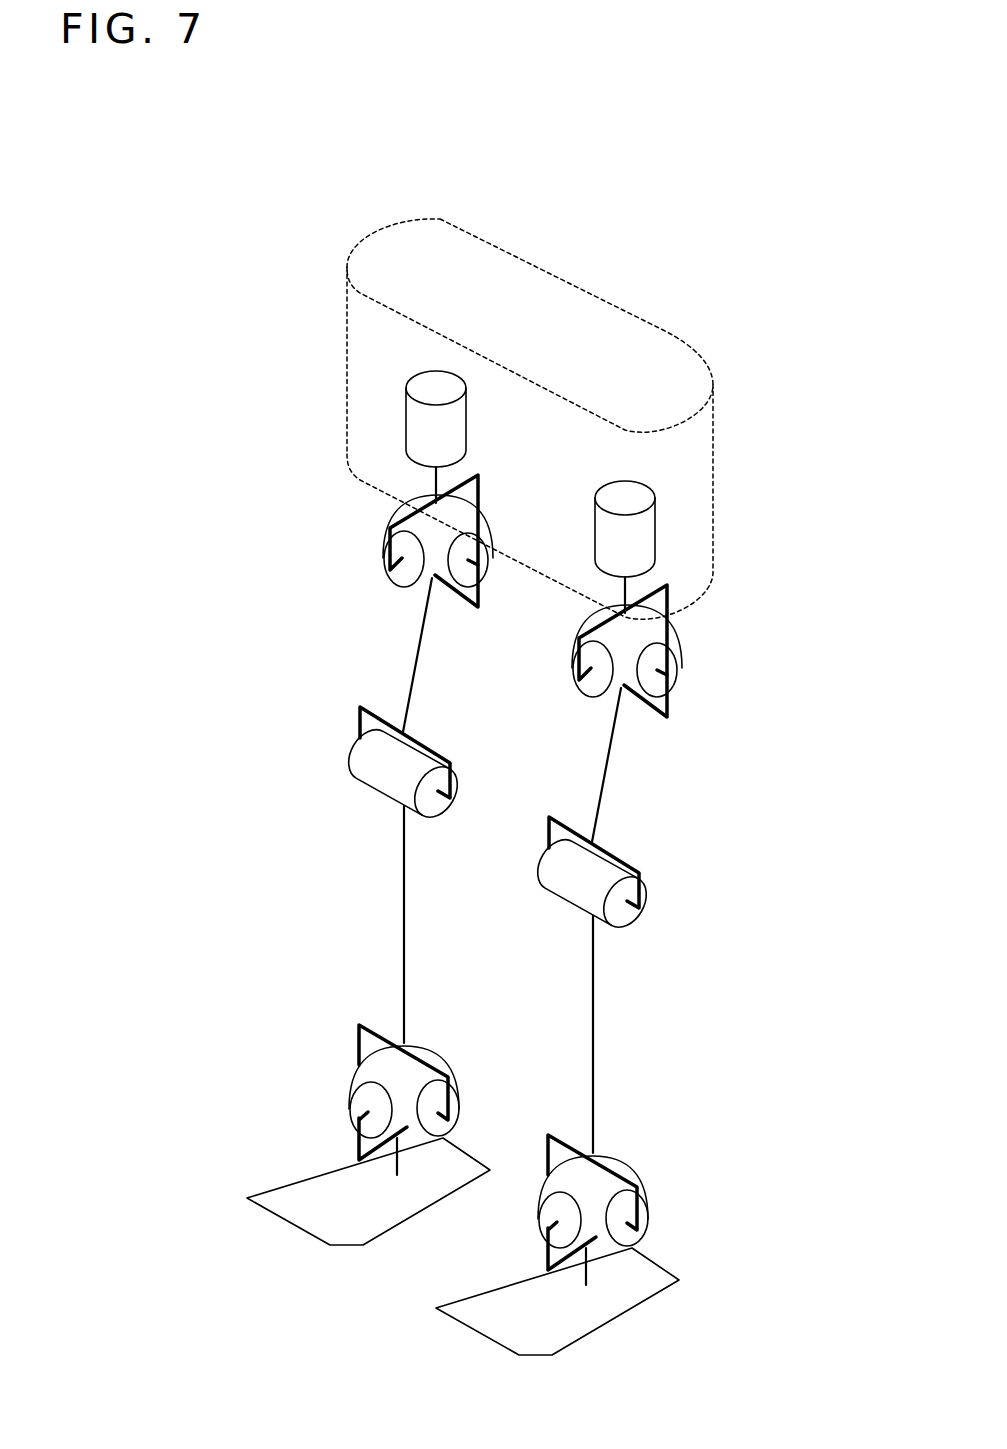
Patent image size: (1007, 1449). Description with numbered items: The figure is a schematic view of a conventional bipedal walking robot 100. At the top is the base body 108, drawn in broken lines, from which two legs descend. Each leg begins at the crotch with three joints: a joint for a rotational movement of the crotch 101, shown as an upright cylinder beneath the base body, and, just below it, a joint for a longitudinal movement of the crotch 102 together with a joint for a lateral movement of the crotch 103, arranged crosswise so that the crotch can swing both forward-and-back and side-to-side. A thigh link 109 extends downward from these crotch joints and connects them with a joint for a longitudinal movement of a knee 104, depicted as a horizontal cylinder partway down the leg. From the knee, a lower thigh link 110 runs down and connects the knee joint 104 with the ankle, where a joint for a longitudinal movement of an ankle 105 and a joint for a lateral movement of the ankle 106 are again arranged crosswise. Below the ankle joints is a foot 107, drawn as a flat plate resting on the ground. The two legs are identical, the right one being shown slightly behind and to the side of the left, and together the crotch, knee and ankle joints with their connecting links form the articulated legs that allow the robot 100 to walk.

The conventional bipedal walking robot 100 is at (300, 175).
The joint for a rotational movement of a crotch 101 is at (436, 388).
The joint for a longitudinal movement of the crotch 102 is at (460, 578).
The joint for a lateral movement of the crotch 103 is at (390, 573).
The joint for a longitudinal movement of a knee 104 is at (373, 762).
The joint for a longitudinal movement of an ankle 105 is at (443, 1132).
The joint for a lateral movement of the ankle 106 is at (360, 1100).
The foot 107 is at (308, 1215).
The base body 108 is at (347, 327).
The thigh link 109 is at (412, 695).
The lower thigh link 110 is at (403, 920).